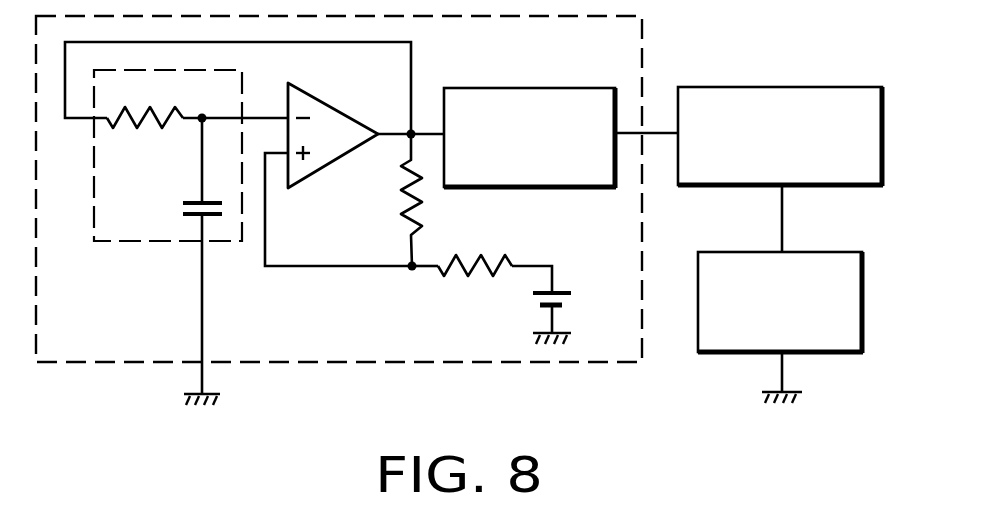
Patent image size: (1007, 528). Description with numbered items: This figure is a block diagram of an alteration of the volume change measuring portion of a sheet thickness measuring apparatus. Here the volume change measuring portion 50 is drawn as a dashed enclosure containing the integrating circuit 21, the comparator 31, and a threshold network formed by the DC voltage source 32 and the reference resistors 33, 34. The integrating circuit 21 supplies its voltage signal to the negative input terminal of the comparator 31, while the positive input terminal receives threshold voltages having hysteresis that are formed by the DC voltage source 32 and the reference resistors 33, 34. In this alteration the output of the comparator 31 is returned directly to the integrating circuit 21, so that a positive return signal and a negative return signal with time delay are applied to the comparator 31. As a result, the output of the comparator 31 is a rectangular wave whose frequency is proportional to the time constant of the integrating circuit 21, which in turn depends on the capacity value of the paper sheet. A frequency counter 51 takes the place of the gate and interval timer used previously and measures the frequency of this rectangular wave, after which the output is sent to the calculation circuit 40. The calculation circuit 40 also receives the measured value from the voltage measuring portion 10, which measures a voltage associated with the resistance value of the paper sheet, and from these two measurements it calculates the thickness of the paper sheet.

The voltage measuring portion 10 is at (819, 253).
The integrating circuit 21 is at (156, 241).
The comparator 31 is at (337, 103).
The DC voltage source 32 is at (535, 302).
The reference resistor 33 is at (490, 260).
The reference resistor 34 is at (405, 217).
The calculation circuit 40 is at (793, 86).
The volume change measuring portion 50 is at (383, 362).
The frequency counter 51 is at (533, 86).